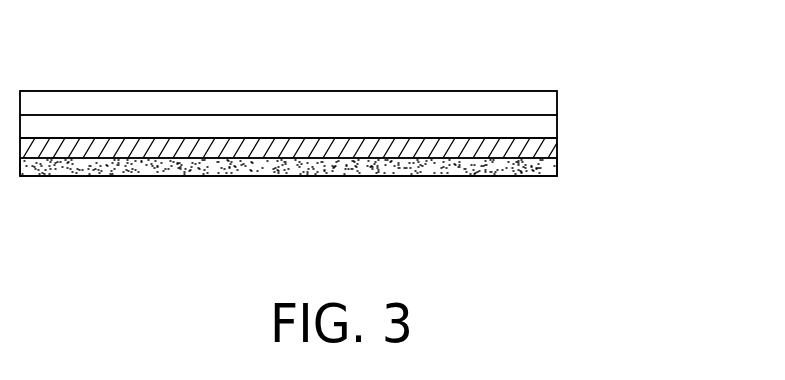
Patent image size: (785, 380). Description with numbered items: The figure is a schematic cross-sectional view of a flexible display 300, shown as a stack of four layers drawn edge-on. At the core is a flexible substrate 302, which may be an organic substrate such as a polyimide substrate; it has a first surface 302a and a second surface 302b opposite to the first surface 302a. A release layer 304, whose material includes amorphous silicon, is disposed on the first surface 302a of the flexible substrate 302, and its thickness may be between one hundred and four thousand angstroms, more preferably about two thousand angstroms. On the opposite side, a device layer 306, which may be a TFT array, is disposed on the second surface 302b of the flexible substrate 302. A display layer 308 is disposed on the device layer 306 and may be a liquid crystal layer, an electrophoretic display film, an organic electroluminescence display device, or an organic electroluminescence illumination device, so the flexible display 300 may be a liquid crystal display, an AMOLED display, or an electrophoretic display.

The flexible display 300 is at (745, 281).
The flexible substrate 302 is at (548, 148).
The first surface 302a is at (548, 165).
The second surface 302b is at (548, 136).
The release layer 304 is at (557, 172).
The device layer 306 is at (543, 123).
The display layer 308 is at (543, 103).